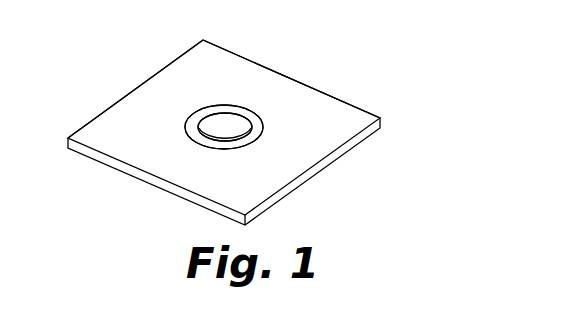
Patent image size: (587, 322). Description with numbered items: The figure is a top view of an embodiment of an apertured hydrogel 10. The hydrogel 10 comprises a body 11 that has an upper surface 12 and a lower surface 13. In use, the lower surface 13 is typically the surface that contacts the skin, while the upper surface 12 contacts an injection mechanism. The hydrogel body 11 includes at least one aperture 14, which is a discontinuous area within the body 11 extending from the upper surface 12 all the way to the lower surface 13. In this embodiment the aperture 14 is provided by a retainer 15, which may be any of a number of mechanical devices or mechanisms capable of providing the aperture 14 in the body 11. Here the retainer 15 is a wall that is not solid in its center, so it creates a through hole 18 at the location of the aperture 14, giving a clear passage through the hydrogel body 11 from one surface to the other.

The apertured hydrogel 10 is at (360, 56).
The body 11 is at (92, 135).
The upper surface 12 is at (353, 122).
The lower surface 13 is at (328, 165).
The aperture 14 is at (260, 95).
The retainer 15 is at (190, 125).
The through hole 18 is at (222, 127).